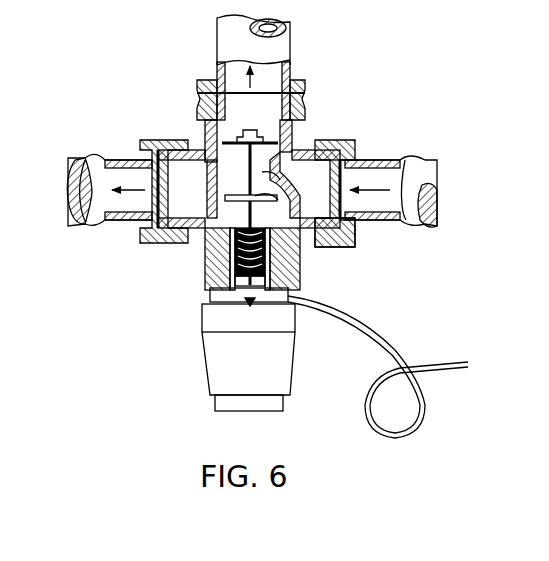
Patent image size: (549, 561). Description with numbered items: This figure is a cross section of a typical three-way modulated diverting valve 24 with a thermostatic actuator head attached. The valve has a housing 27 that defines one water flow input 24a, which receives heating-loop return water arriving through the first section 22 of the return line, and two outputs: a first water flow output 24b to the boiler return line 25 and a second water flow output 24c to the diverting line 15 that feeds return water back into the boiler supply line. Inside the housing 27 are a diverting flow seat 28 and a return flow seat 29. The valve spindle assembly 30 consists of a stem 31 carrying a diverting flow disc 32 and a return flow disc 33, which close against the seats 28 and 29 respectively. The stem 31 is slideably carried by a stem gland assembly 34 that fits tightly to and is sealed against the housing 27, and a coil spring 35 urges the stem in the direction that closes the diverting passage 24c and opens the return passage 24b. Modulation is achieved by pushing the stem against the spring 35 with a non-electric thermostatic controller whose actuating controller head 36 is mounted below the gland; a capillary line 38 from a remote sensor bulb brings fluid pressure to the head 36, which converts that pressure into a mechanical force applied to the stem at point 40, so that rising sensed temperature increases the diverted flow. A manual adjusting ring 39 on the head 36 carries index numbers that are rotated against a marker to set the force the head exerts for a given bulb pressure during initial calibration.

The diverting line 15 is at (292, 40).
The first section of return line 22 is at (405, 226).
The three-way modulated diverting valve 24 is at (115, 275).
The water flow input 24a is at (345, 252).
The first water flow output 24b is at (175, 118).
The second water flow output 24c is at (312, 101).
The boiler return line 25 is at (92, 158).
The housing 27 is at (300, 140).
The diverting flow seat 28 is at (268, 190).
The return flow seat 29 is at (224, 199).
The valve spindle assembly 30 is at (200, 265).
The stem 31 is at (222, 178).
The diverting flow disc 32 is at (226, 143).
The return flow disc 33 is at (280, 197).
The stem gland assembly 34 is at (290, 256).
The coil spring 35 is at (207, 248).
The actuating controller head 36 is at (290, 380).
The capillary line 38 is at (430, 398).
The manual adjusting ring 39 is at (296, 318).
The point of force application 40 is at (240, 286).